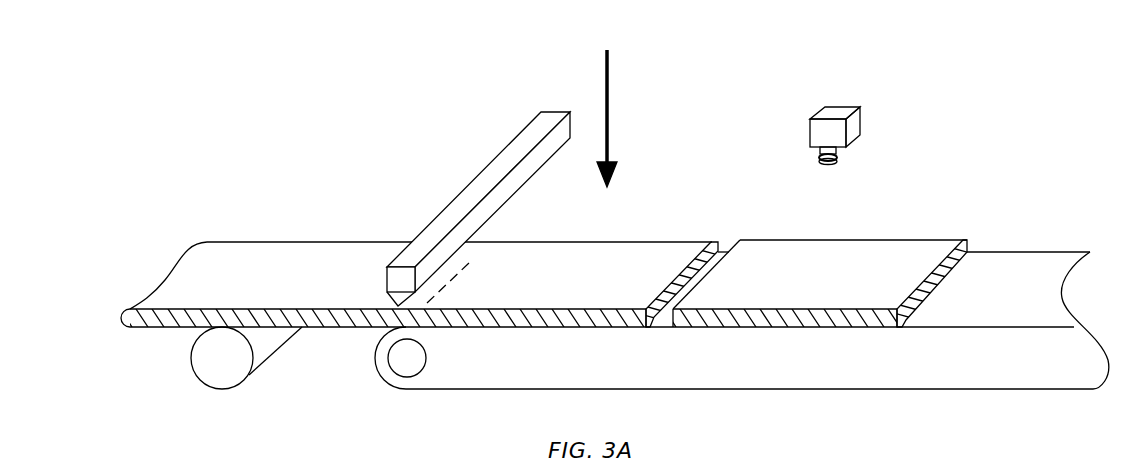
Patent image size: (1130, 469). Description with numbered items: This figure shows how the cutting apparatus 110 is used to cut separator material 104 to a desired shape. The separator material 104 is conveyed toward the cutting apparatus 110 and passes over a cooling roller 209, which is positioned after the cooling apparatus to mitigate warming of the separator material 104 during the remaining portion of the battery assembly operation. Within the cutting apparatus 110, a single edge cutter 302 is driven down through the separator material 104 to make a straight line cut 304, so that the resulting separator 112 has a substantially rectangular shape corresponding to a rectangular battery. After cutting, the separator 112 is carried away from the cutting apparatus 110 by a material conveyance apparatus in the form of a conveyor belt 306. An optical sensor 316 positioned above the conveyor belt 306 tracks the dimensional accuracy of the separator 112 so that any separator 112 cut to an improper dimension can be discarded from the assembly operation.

The cutting apparatus 110 is at (118, 100).
The separator material 104 is at (267, 288).
The separator 112 is at (834, 283).
The cooling roller 209 is at (213, 387).
The single edge cutter 302 is at (556, 112).
The straight line cut 304 is at (476, 256).
The conveyor belt 306 is at (731, 371).
The optical sensor 316 is at (818, 113).